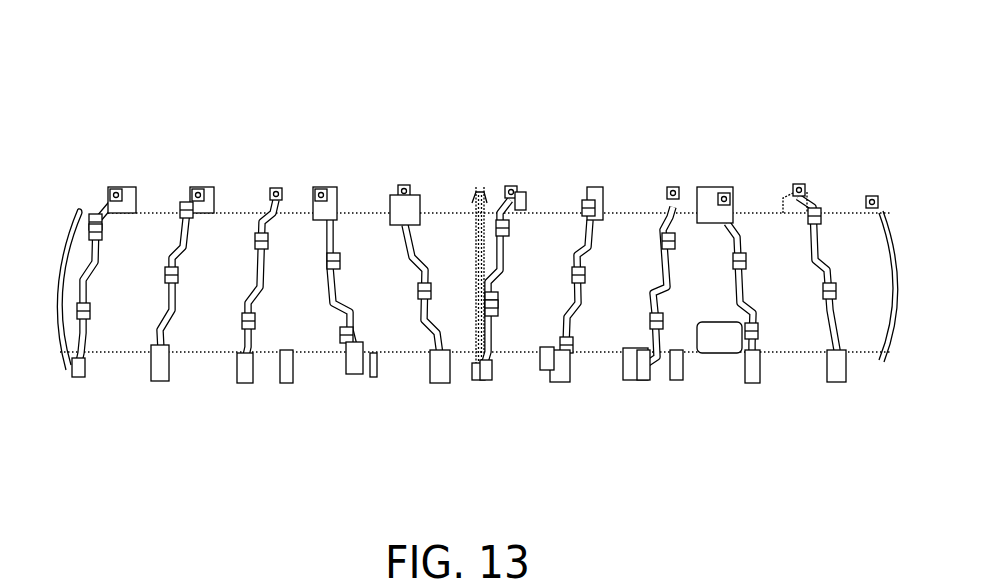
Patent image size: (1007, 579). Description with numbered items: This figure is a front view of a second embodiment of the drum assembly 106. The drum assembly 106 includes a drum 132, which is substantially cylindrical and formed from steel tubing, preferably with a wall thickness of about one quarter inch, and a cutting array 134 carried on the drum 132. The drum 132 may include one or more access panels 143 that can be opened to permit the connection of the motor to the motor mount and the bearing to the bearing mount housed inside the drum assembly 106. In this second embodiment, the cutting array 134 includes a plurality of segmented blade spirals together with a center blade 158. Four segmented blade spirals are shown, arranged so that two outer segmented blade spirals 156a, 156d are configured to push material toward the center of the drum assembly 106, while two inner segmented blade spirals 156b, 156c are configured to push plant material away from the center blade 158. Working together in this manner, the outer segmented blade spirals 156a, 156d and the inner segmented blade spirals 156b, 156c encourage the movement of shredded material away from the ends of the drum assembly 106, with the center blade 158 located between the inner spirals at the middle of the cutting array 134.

The drum assembly 106 is at (483, 269).
The drum 132 is at (301, 243).
The cutting array 134 is at (474, 158).
The access panel 143 is at (717, 332).
The outer segmented blade spiral 156a is at (182, 300).
The inner segmented blade spiral 156b is at (350, 365).
The inner segmented blade spiral 156c is at (572, 350).
The outer segmented blade spiral 156d is at (830, 313).
The center blade 158 is at (475, 323).